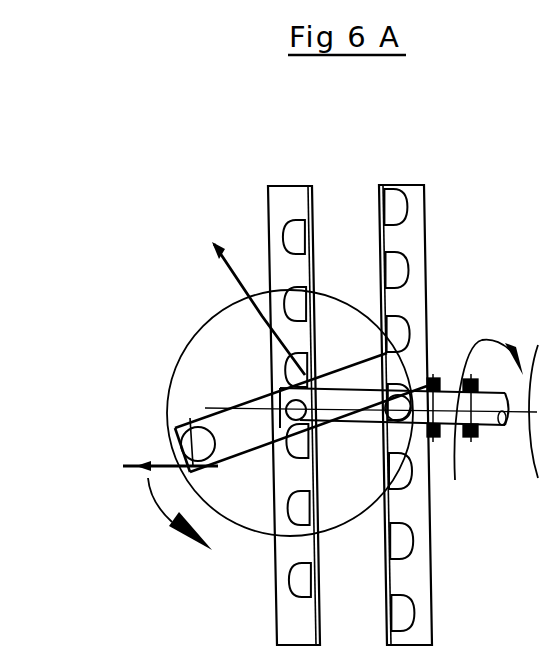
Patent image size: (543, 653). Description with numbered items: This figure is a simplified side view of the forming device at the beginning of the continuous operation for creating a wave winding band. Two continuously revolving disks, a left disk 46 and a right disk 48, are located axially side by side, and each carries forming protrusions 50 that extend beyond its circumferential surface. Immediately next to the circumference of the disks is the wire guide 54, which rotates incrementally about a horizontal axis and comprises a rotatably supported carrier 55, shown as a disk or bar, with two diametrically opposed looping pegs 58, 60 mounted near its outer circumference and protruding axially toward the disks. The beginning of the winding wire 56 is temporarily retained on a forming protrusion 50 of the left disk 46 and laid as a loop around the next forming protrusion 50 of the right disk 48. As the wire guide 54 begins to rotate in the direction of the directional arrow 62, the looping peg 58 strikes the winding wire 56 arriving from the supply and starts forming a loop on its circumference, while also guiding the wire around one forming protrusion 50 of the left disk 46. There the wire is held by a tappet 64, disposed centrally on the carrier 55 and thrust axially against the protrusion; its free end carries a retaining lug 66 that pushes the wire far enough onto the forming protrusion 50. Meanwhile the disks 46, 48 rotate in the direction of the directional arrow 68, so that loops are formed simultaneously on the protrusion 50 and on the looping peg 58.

The left disk 46 is at (272, 222).
The right disk 48 is at (418, 193).
The forming protrusions 50 is at (297, 223).
The wire guide 54 is at (242, 425).
The carrier 55 is at (220, 423).
The winding wire 56 is at (237, 287).
The looping peg 58 is at (183, 441).
The looping peg 60 is at (403, 367).
The directional arrow 62 is at (172, 522).
The tappet 64 is at (317, 435).
The retaining lug 66 is at (265, 393).
The directional arrow 68 is at (485, 340).